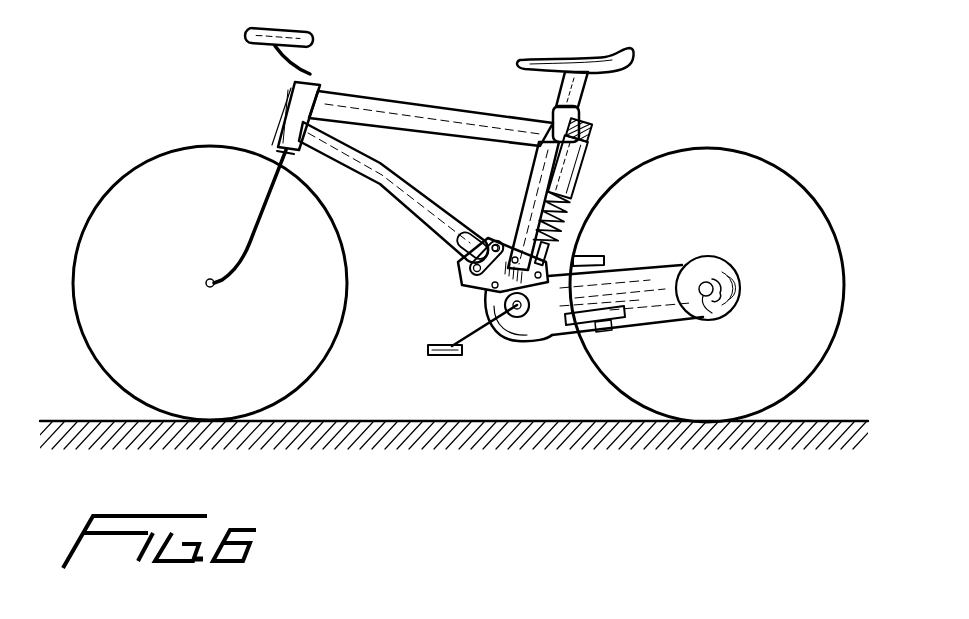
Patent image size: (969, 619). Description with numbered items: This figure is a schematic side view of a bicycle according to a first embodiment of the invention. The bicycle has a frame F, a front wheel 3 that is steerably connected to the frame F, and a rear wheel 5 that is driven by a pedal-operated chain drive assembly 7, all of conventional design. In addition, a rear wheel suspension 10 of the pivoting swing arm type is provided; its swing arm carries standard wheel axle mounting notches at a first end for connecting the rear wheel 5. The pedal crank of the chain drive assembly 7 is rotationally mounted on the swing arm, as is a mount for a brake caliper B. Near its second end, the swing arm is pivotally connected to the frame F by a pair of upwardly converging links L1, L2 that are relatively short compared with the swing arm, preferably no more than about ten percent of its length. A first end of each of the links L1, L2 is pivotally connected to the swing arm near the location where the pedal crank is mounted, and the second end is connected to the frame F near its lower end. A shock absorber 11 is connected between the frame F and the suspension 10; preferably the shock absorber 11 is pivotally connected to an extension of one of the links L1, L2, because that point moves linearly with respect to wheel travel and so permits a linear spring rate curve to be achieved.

The front wheel 3 is at (158, 168).
The rear wheel 5 is at (760, 167).
The frame F is at (414, 104).
The shock absorber 11 is at (590, 150).
The first converging link L1 is at (507, 243).
The second converging link L2 is at (462, 238).
The rear wheel suspension 10 is at (455, 285).
The pedal-operated chain drive assembly 7 is at (512, 354).
The brake caliper B is at (575, 327).